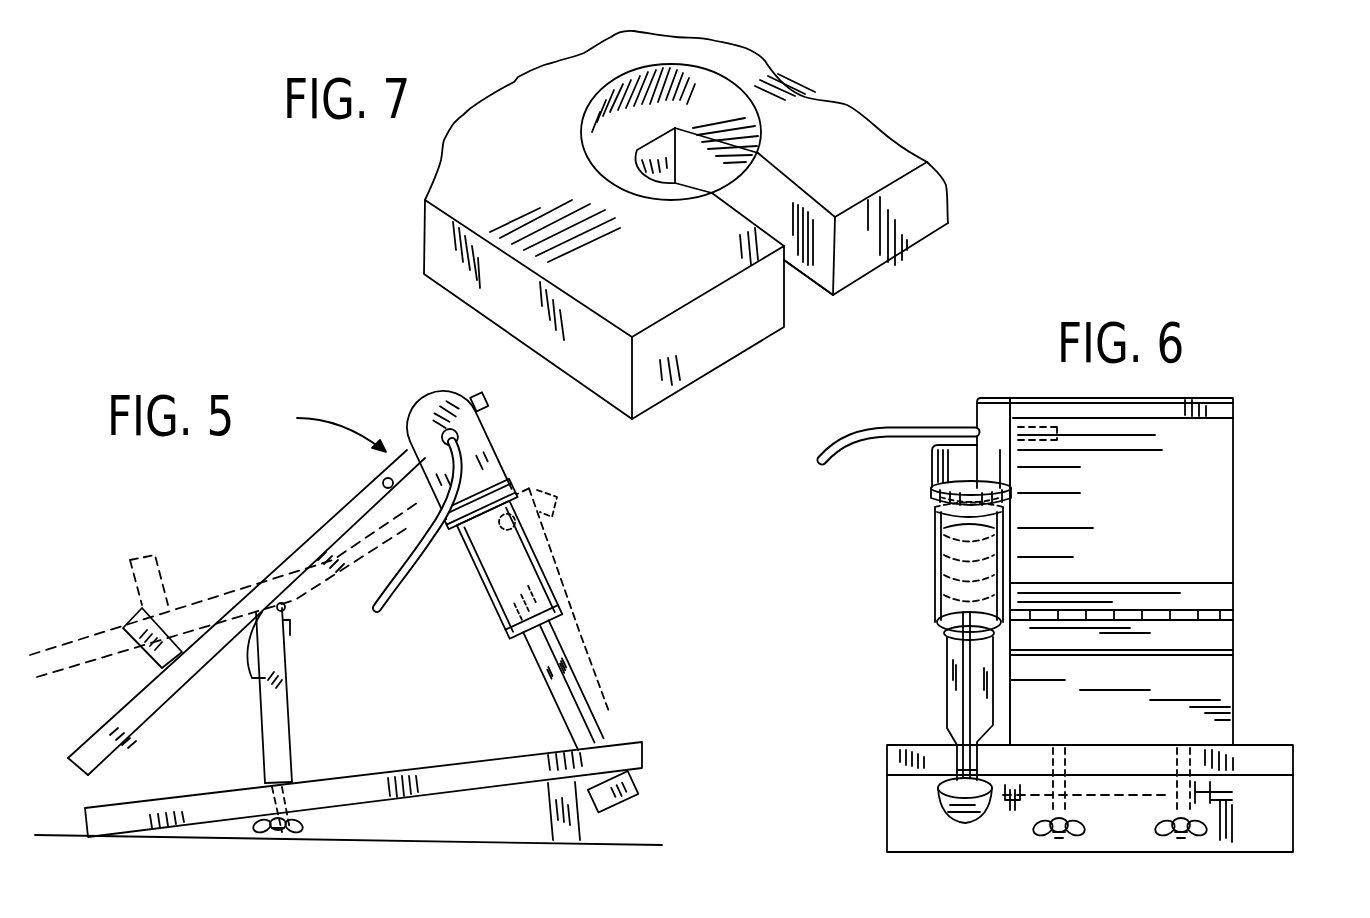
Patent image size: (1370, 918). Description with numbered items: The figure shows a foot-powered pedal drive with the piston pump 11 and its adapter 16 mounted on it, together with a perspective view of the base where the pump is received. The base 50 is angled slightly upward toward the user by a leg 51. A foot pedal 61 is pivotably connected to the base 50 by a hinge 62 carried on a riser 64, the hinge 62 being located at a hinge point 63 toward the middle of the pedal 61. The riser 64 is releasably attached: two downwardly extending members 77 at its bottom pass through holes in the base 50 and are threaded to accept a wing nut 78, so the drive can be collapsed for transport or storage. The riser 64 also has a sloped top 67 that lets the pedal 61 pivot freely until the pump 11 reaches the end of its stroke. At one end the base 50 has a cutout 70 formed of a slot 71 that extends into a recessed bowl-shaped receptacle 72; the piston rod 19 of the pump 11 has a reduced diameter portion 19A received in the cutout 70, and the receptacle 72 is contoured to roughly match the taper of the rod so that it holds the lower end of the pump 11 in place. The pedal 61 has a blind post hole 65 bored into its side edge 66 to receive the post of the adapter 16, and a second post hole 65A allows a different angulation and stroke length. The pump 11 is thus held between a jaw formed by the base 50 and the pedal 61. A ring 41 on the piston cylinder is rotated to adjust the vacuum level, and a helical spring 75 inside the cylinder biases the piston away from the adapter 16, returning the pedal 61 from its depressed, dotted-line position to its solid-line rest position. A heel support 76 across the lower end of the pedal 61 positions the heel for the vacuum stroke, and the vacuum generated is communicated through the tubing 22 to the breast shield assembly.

In FIG. 5, the piston pump 11 is at (527, 523).
In FIG. 6, the piston pump 11 is at (935, 572).
In FIG. 5, the adapter 16 is at (472, 433).
In FIG. 6, the adapter 16 is at (933, 470).
In FIG. 5, the piston rod 19 is at (572, 670).
In FIG. 6, the piston rod 19 is at (906, 696).
In FIG. 6, the reduced diameter portion 19A is at (957, 763).
In FIG. 5, the tubing 22 is at (463, 468).
In FIG. 6, the tubing 22 is at (887, 426).
In FIG. 5, the ring 41 is at (513, 483).
In FIG. 6, the ring 41 is at (950, 489).
In FIG. 7, the base 50 is at (705, 225).
In FIG. 5, the base 50 is at (643, 753).
In FIG. 6, the base 50 is at (1295, 770).
In FIG. 5, the leg 51 is at (560, 817).
In FIG. 6, the leg 51 is at (1295, 813).
In FIG. 5, the foot pedal 61 is at (482, 400).
In FIG. 6, the foot pedal 61 is at (1205, 392).
In FIG. 5, the hinge 62 is at (285, 628).
In FIG. 6, the hinge 62 is at (1126, 571).
In FIG. 5, the hinge point 63 is at (286, 609).
In FIG. 5, the riser 64 is at (292, 718).
In FIG. 6, the riser 64 is at (1233, 690).
In FIG. 6, the post hole 65 is at (1057, 428).
In FIG. 5, the second post hole 65A is at (383, 482).
In FIG. 5, the side edge 66 is at (246, 612).
In FIG. 6, the side edge 66 is at (1010, 397).
In FIG. 5, the sloped top 67 is at (256, 676).
In FIG. 7, the cutout 70 is at (738, 79).
In FIG. 6, the cutout 70 is at (948, 739).
In FIG. 7, the slot 71 is at (816, 272).
In FIG. 7, the receptacle 72 is at (613, 121).
In FIG. 5, the receptacle 72 is at (610, 743).
In FIG. 6, the receptacle 72 is at (965, 800).
In FIG. 6, the helical spring 75 is at (957, 558).
In FIG. 5, the heel support 76 is at (120, 675).
In FIG. 5, the downwardly extending members 77 is at (285, 797).
In FIG. 6, the downwardly extending members 77 is at (1063, 763).
In FIG. 5, the wing nut 78 is at (305, 827).
In FIG. 6, the wing nut 78 is at (1080, 830).